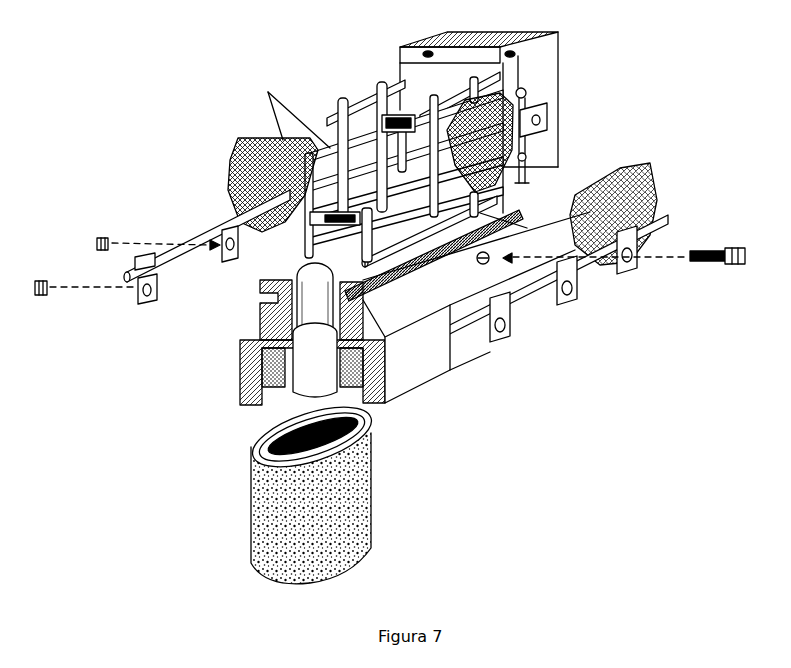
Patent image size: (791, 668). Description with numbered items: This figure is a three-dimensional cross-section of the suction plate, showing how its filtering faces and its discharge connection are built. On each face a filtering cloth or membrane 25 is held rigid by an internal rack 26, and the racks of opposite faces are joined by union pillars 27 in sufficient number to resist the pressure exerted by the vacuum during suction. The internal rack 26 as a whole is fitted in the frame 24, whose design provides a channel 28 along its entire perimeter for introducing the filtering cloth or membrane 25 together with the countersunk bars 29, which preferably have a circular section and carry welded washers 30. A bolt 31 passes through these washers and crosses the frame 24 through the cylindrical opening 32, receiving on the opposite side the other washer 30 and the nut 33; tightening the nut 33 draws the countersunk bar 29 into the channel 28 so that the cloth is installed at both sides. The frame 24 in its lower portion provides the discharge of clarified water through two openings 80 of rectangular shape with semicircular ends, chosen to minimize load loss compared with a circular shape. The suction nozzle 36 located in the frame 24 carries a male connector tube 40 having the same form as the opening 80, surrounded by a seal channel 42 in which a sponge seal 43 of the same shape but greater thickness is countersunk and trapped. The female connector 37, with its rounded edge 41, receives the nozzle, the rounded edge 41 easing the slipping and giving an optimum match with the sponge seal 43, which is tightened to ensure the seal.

The frame 24 is at (431, 184).
The filtering cloth or membrane 25 is at (638, 196).
The internal rack 26 is at (262, 164).
The union pillars 27 is at (345, 169).
The channel 28 is at (232, 310).
The countersunk bar 29 is at (177, 247).
The washer 30 is at (220, 224).
The bolt 31 is at (720, 264).
The cylindrical opening 32 is at (522, 297).
The nut 33 is at (42, 297).
The suction nozzle 36 is at (410, 364).
The female connector 37 is at (250, 522).
The male connector tube 40 is at (273, 425).
The rounded edge 41 is at (372, 440).
The seal channel 42 is at (253, 380).
The sponge seal 43 is at (224, 369).
The opening 80 is at (228, 312).